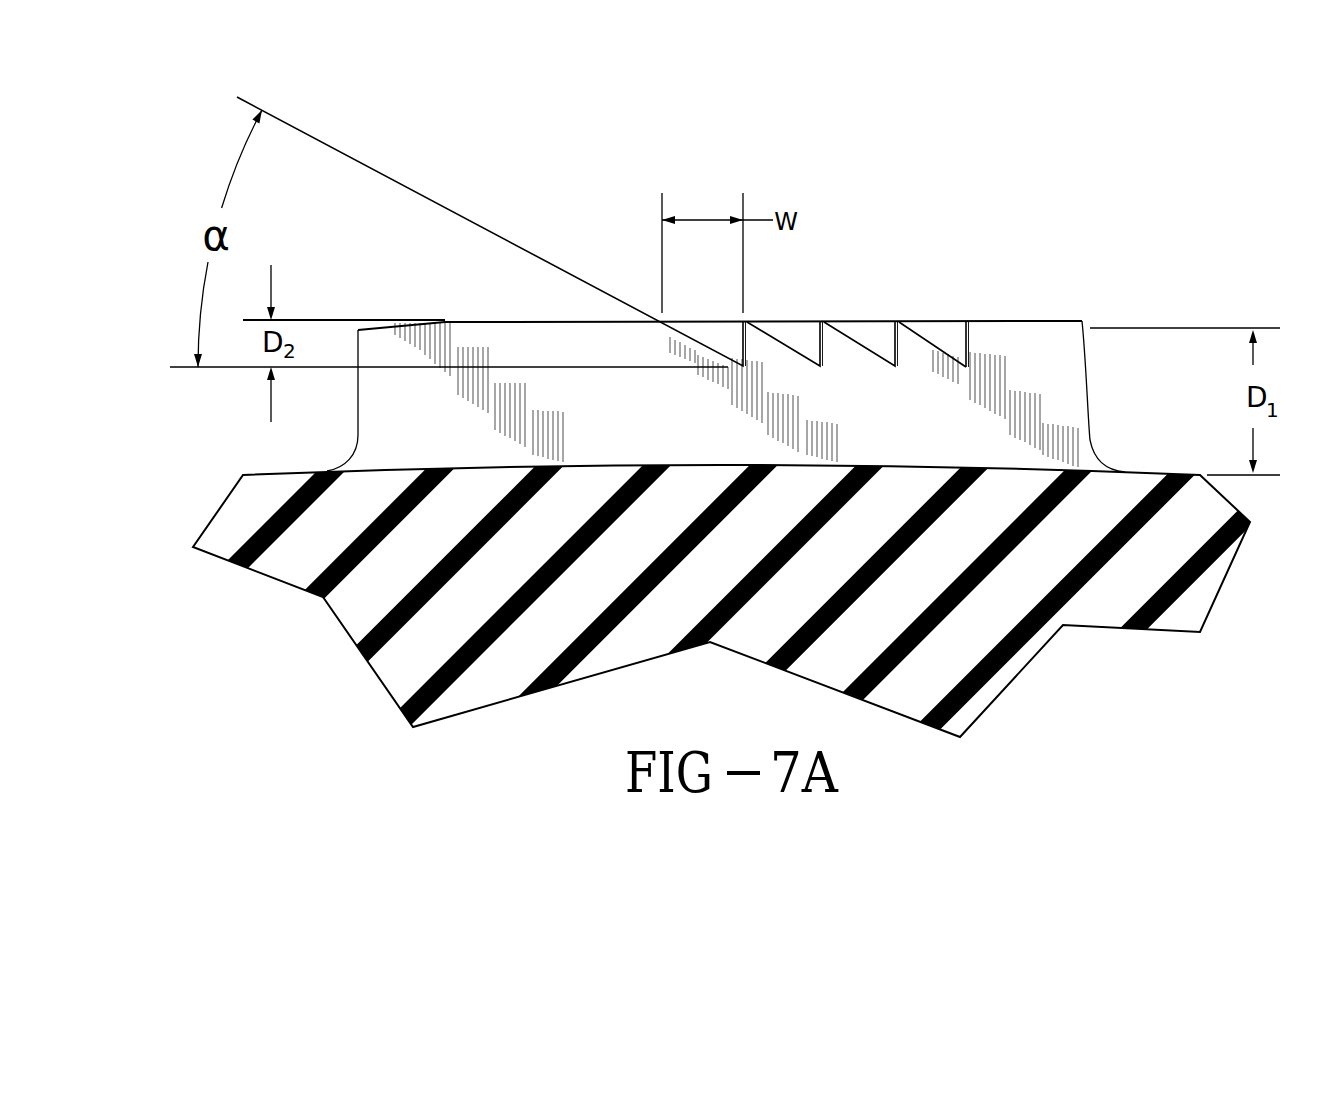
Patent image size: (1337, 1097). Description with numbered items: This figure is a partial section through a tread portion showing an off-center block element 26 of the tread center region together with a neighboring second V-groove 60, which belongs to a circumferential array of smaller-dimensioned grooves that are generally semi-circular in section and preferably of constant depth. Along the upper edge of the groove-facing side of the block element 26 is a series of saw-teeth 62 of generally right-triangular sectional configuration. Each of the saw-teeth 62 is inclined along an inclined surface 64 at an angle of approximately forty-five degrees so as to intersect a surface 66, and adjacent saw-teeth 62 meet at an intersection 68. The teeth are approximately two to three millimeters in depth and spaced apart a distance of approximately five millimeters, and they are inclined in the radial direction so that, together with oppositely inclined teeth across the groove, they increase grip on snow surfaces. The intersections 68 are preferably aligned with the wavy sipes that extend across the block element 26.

The second V-groove 60 is at (272, 450).
The off-center block element 26 is at (996, 437).
The saw-teeth 62 is at (635, 248).
The inclined surface 64 is at (940, 350).
The surface 66 is at (806, 338).
The intersection 68 is at (964, 365).